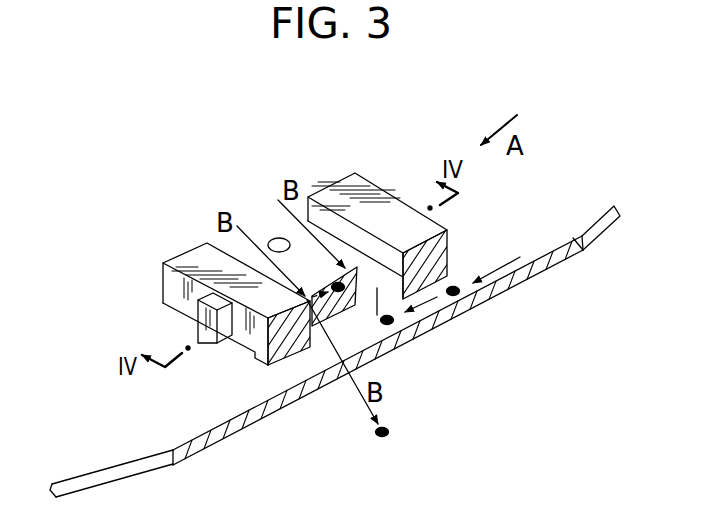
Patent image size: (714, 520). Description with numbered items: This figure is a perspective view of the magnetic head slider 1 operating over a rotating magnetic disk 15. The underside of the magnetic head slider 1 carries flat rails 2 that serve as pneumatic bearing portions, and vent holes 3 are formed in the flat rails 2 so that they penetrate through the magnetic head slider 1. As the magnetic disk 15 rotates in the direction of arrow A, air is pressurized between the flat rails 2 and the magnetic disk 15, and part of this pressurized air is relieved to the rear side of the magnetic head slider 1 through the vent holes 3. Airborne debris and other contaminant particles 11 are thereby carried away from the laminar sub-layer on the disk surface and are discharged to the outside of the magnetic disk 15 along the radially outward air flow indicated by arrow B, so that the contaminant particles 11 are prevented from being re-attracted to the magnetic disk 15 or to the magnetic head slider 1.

The magnetic head slider 1 is at (389, 189).
The flat rails 2 is at (163, 307).
The vent holes 3 is at (278, 238).
The contaminant particles 11 is at (453, 285).
The magnetic disk 15 is at (147, 467).